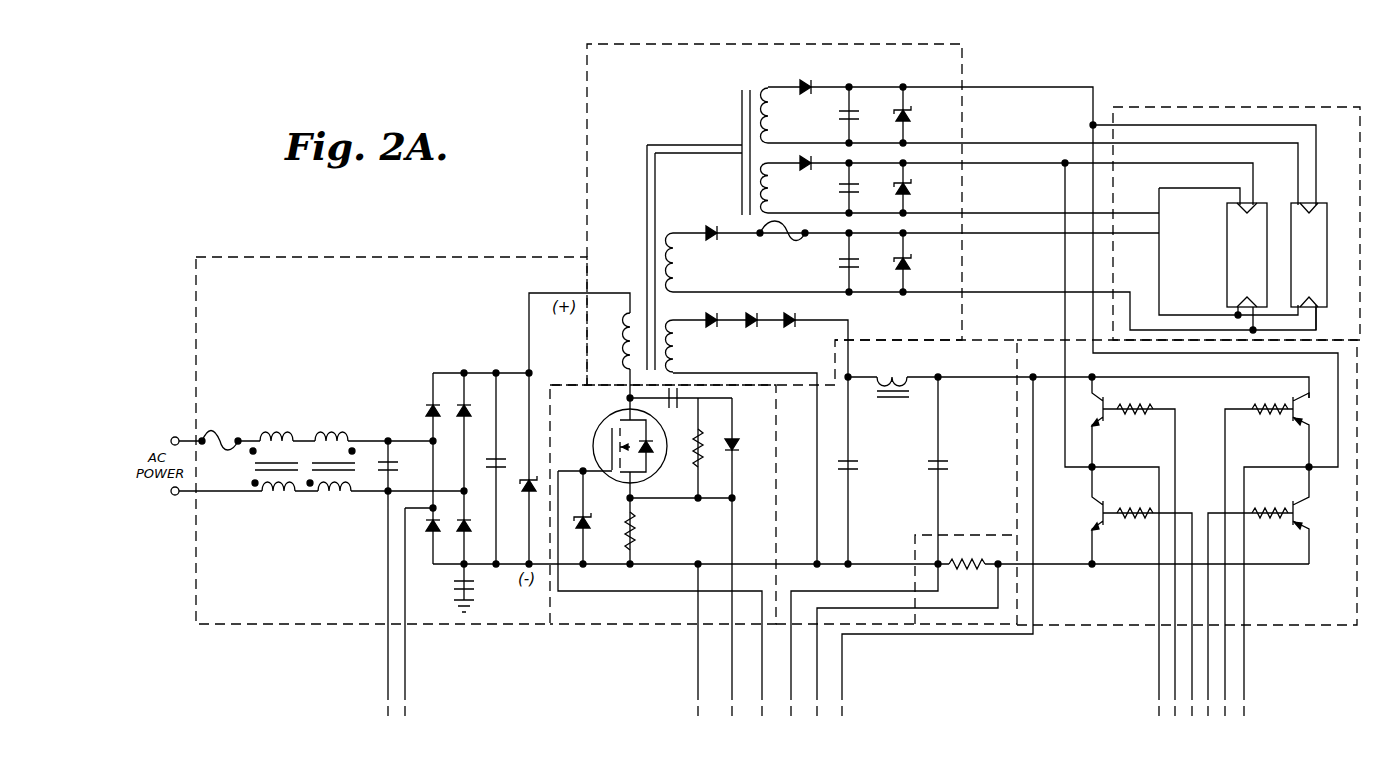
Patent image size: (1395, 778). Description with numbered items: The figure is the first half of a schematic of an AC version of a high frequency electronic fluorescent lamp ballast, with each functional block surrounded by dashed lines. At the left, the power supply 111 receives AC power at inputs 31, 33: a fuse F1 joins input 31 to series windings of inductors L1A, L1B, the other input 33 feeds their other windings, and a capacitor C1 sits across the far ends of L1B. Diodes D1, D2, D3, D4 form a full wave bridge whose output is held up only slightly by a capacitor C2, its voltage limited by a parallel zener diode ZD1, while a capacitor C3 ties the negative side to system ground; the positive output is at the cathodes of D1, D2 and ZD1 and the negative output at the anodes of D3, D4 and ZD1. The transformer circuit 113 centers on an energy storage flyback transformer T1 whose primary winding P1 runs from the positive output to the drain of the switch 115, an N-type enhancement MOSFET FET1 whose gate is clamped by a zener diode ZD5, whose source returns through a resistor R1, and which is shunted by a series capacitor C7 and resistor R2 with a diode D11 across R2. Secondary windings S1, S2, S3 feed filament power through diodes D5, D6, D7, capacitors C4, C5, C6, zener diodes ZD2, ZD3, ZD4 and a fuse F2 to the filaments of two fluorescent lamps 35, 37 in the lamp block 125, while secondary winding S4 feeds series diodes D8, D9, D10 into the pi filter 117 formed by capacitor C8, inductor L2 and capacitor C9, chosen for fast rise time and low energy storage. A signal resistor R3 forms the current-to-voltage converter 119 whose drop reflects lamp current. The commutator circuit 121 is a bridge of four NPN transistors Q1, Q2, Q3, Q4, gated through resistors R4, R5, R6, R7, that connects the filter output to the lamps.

The AC input 31 is at (173, 436).
The AC power input 33 is at (173, 496).
The fluorescent lamp 35 is at (1327, 234).
The fluorescent lamp 37 is at (1226, 258).
The power supply 111 is at (323, 272).
The transformer circuit 113 is at (606, 54).
The switch 115 is at (622, 618).
The pi filter 117 is at (893, 620).
The current-to-voltage converter 119 is at (1010, 618).
The commutator circuit 121 is at (1287, 622).
The lamp section 125 is at (1212, 110).
The fuse F1 is at (220, 433).
The inductor L1A is at (284, 429).
The inductor L1B is at (338, 430).
The capacitor C1 is at (399, 466).
The diode D1 is at (426, 409).
The diode D2 is at (468, 395).
The diode D3 is at (430, 556).
The diode D4 is at (470, 525).
The capacitor C2 is at (500, 456).
The zener diode ZD1 is at (527, 494).
The capacitor C3 is at (473, 588).
The primary winding P1 is at (613, 341).
The energy storage flyback transformer T1 is at (678, 142).
The N-type enhancement MOSFET FET1 is at (608, 415).
The capacitor C7 is at (676, 410).
The resistor R2 is at (684, 460).
The diode D11 is at (748, 452).
The zener diode ZD5 is at (592, 517).
The resistor R1 is at (642, 531).
The secondary winding S1 is at (783, 115).
The secondary winding S2 is at (784, 189).
The secondary winding S3 is at (688, 262).
The secondary winding S4 is at (688, 346).
The diode D5 is at (808, 73).
The diode D6 is at (800, 173).
The diode D7 is at (708, 224).
The diode D8 is at (702, 311).
The diode D9 is at (743, 311).
The diode D10 is at (785, 311).
The fuse F2 is at (782, 243).
The capacitor C4 is at (859, 115).
The capacitor C5 is at (859, 188).
The capacitor C6 is at (859, 262).
The zener diode ZD2 is at (920, 115).
The zener diode ZD3 is at (920, 188).
The zener diode ZD4 is at (920, 262).
The inductor L2 is at (893, 374).
The capacitor C8 is at (860, 470).
The capacitor C9 is at (880, 533).
The signal resistor R3 is at (962, 556).
The NPN transistor Q1 is at (1084, 422).
The NPN transistor Q2 is at (1080, 515).
The NPN transistor Q3 is at (1313, 430).
The NPN transistor Q4 is at (1314, 515).
The resistor R4 is at (1139, 538).
The resistor R5 is at (1147, 590).
The resistor R6 is at (1259, 538).
The resistor R7 is at (1250, 590).